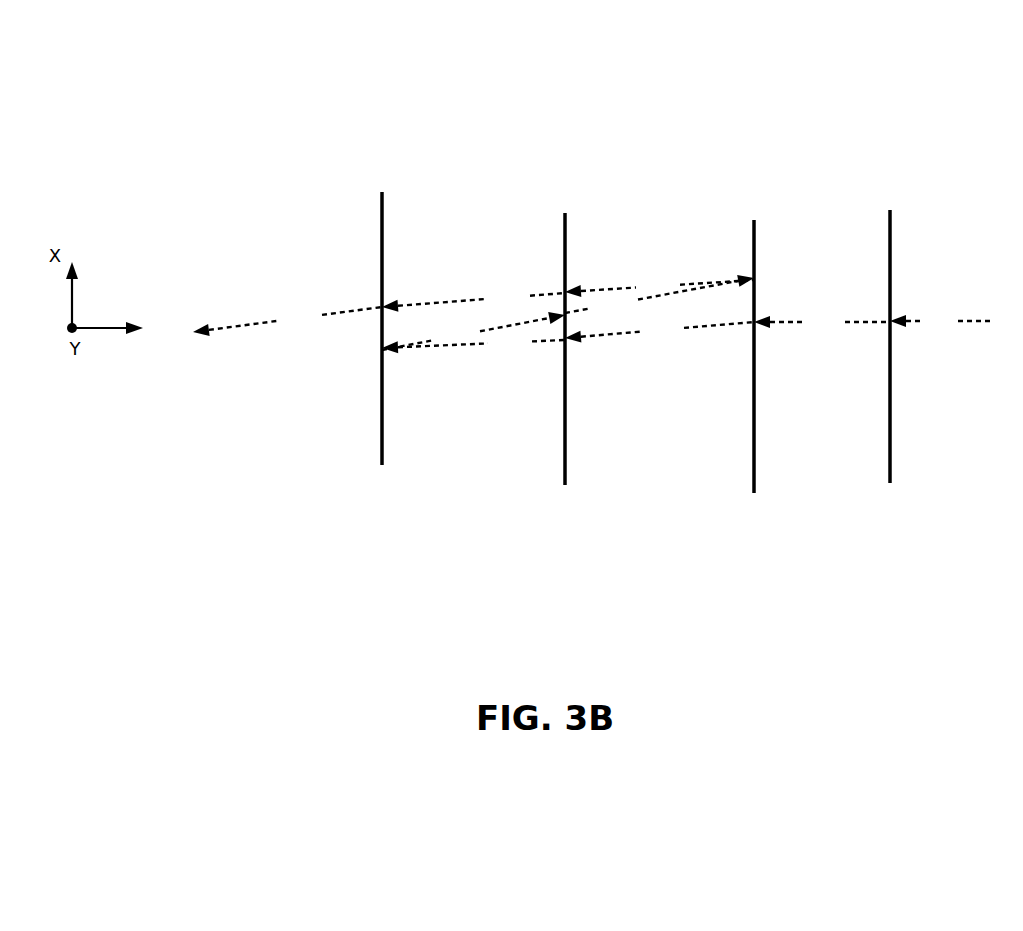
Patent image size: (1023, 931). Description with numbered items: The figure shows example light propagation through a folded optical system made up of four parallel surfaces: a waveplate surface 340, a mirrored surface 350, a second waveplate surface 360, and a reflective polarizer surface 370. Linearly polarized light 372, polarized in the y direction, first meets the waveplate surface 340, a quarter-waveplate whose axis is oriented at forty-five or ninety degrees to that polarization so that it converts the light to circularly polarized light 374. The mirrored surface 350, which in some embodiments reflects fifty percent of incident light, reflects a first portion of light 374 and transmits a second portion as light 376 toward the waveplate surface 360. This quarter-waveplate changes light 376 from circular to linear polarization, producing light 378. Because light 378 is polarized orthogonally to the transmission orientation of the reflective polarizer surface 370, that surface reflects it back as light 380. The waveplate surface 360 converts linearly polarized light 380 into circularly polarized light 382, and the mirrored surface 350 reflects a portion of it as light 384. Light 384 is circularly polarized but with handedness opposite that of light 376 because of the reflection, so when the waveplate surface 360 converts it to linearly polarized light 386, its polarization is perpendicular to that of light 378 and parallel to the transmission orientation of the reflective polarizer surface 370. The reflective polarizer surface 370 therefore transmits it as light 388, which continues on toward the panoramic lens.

The waveplate surface 340 is at (893, 221).
The mirrored surface 350 is at (720, 227).
The waveplate surface 360 is at (565, 222).
The reflective polarizer surface 370 is at (382, 220).
The light 372 is at (941, 320).
The light 374 is at (822, 321).
The light 376 is at (659, 330).
The light 378 is at (473, 344).
The light 380 is at (473, 331).
The light 382 is at (659, 297).
The light 384 is at (659, 284).
The light 386 is at (473, 298).
The light 388 is at (287, 319).